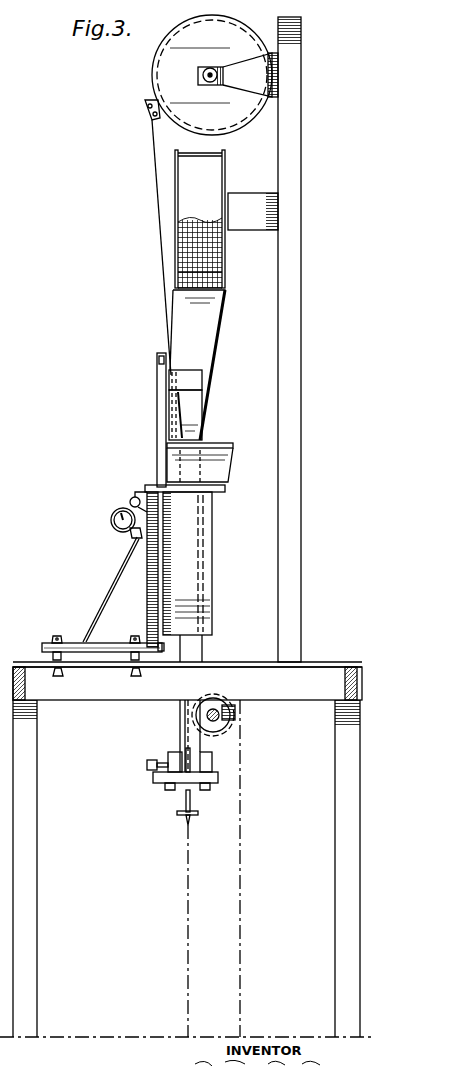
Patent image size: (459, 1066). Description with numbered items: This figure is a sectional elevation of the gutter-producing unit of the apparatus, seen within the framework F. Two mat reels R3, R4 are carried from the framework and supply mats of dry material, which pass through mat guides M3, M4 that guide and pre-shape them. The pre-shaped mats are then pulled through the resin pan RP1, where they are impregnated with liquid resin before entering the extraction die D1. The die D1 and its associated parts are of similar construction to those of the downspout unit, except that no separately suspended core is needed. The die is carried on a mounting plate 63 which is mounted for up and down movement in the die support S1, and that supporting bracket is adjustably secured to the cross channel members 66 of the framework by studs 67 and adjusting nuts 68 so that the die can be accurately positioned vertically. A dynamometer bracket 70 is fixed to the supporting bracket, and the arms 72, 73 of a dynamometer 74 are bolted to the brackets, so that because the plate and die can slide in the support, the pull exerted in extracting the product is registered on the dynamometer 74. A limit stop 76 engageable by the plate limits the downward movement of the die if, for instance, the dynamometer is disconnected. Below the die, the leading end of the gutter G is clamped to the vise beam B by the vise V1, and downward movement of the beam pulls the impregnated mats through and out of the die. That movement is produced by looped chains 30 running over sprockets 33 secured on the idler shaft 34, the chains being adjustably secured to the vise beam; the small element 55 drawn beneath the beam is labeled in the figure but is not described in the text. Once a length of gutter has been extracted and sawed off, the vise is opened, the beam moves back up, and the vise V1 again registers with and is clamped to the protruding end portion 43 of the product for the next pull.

The mat reel R3 is at (150, 72).
The mat reel R4 is at (226, 180).
The mat guide M3 is at (215, 340).
The mat guide M4 is at (168, 410).
The mounting plate 63 is at (156, 360).
The resin pan RP1 is at (214, 446).
The dynamometer bracket 70 is at (146, 492).
The dynamometer arm 72 is at (130, 502).
The dynamometer 74 is at (110, 519).
The dynamometer arm 73 is at (130, 533).
The die support S1 is at (110, 582).
The studs 67 is at (57, 636).
The adjusting nuts 68 is at (84, 640).
The limit stop 76 is at (165, 648).
The extraction die D1 is at (219, 583).
The cross channel members 66 is at (117, 693).
The gutter G is at (173, 725).
The protruding end portions 43 is at (185, 755).
The sprockets 33 is at (236, 728).
The idler shaft 34 is at (236, 712).
The vise V1 is at (152, 768).
The vise beam B is at (185, 803).
The discharge tip 55 is at (184, 820).
The looped chains 30 is at (243, 813).
The framework F is at (329, 755).